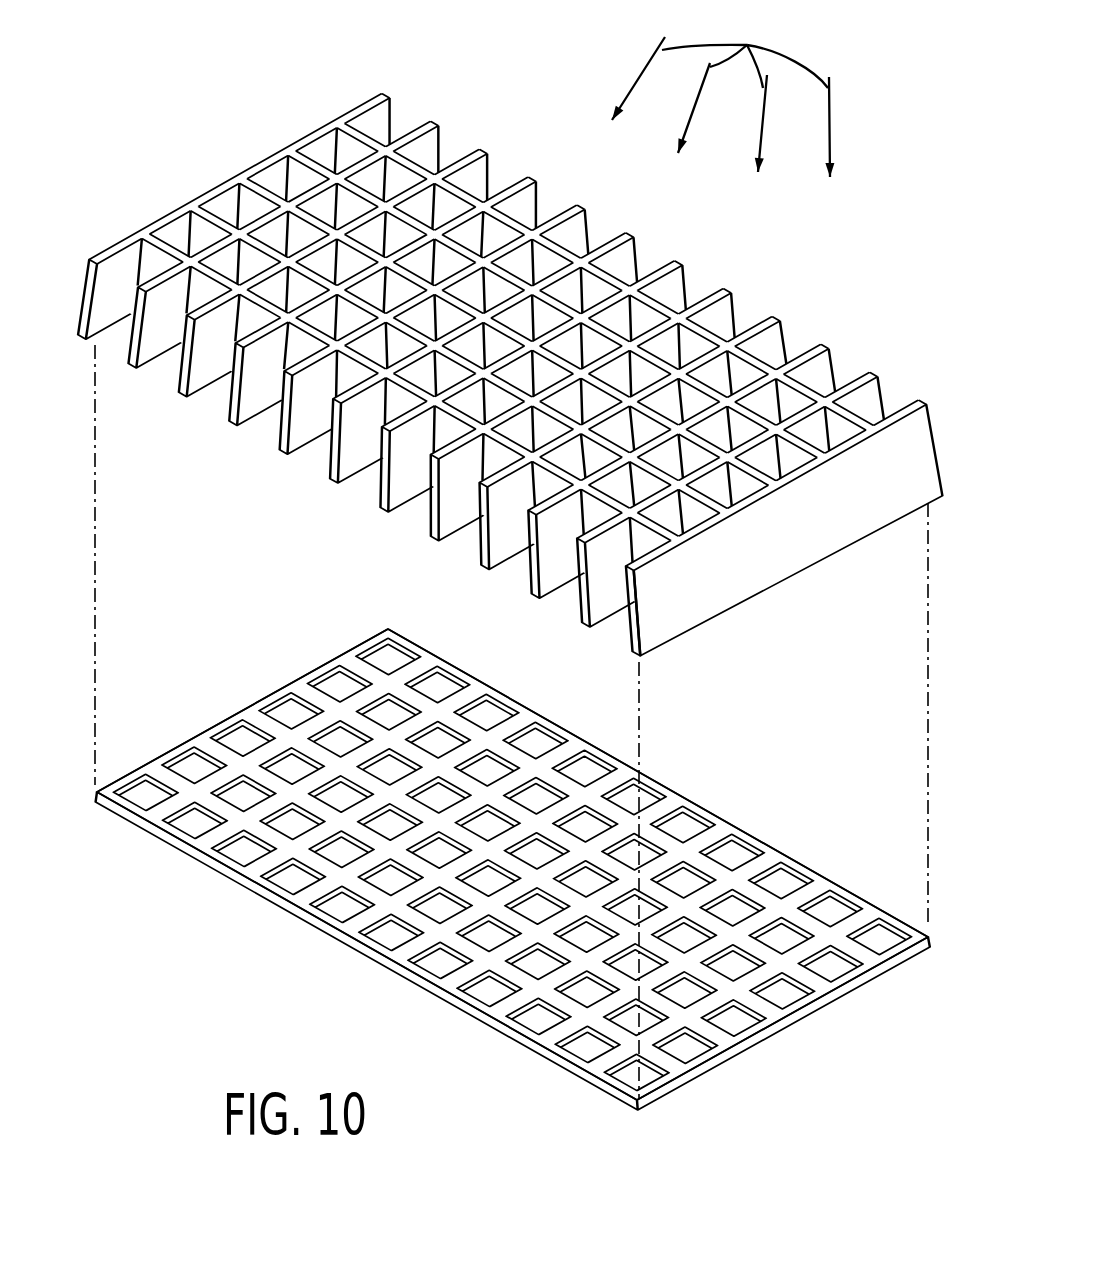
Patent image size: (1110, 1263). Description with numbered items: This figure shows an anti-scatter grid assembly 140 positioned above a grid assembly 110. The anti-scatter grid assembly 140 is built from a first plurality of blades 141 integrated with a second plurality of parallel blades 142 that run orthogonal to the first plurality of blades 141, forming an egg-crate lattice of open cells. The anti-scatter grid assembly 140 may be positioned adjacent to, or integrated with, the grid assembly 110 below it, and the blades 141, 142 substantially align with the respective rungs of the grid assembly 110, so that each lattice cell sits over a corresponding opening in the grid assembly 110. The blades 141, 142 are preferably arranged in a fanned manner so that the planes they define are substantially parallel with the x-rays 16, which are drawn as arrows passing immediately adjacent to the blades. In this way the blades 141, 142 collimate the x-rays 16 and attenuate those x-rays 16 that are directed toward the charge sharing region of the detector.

The x-rays 16 is at (723, 95).
The grid assembly 110 is at (512, 885).
The anti-scatter grid assembly 140 is at (516, 344).
The first plurality of blades 141 is at (807, 360).
The second plurality of parallel blades 142 is at (268, 185).